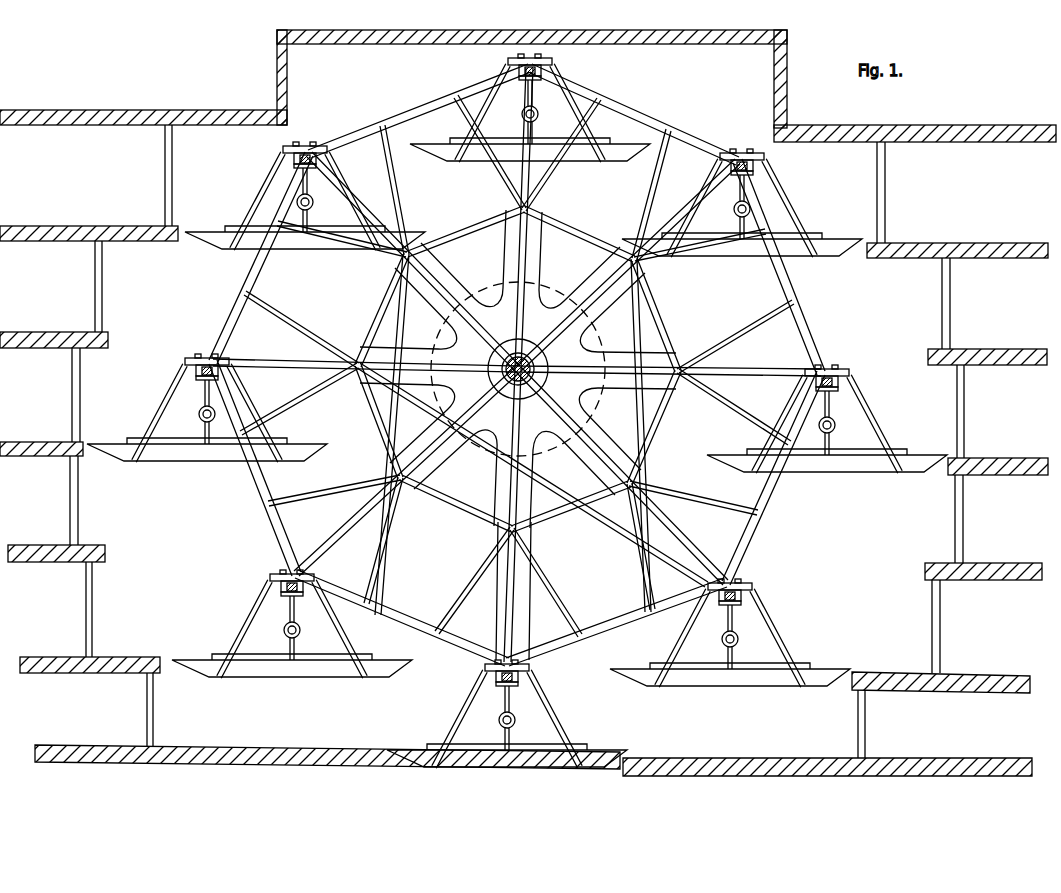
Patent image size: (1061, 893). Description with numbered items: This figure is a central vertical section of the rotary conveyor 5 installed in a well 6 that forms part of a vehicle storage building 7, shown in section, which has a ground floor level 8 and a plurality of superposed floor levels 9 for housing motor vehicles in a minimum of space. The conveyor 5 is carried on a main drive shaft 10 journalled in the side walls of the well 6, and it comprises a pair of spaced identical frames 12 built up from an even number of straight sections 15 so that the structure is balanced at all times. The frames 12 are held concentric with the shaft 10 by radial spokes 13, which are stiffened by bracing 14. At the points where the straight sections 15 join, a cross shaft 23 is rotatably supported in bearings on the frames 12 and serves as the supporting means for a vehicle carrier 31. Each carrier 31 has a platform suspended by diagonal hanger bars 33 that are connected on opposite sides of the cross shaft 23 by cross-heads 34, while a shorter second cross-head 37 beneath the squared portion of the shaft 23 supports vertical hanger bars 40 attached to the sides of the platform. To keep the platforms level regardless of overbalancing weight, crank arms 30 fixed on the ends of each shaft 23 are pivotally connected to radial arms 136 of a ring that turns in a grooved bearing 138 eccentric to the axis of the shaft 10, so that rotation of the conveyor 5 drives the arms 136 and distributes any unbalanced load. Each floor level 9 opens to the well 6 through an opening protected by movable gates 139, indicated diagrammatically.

The rotary conveyor 5 is at (517, 409).
The well 6 is at (517, 409).
The vehicle storage building 7 is at (935, 122).
The ground floor level 8 is at (255, 746).
The superposed floor levels 9 is at (62, 226).
The main drive shaft 10 is at (505, 392).
The frames 12 is at (506, 382).
The radial spokes 13 is at (400, 366).
The bracing 14 is at (670, 341).
The straight sections 15 is at (440, 92).
The cross shaft 23 is at (555, 65).
The crank arms 30 is at (738, 189).
The vehicle carrier 31 is at (484, 162).
The diagonal hanger bars 33 is at (275, 192).
The cross-heads 34 is at (517, 62).
The second cross-head 37 is at (842, 383).
The vertical hanger bars 40 is at (205, 440).
The radial arms 136 is at (370, 290).
The grooved bearing 138 is at (605, 410).
The movable gates 139 is at (885, 209).